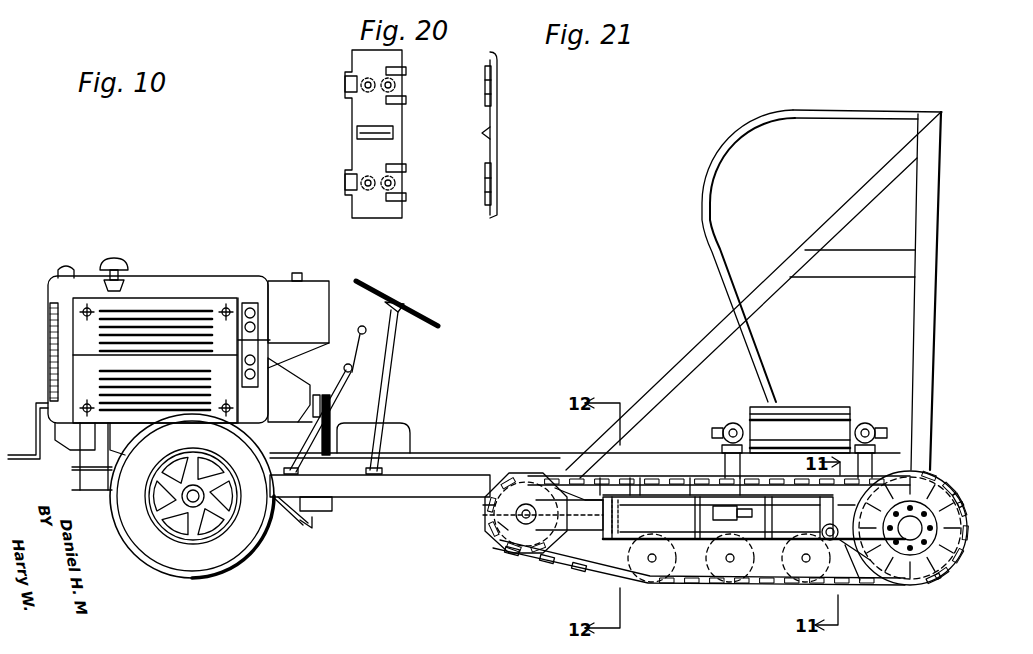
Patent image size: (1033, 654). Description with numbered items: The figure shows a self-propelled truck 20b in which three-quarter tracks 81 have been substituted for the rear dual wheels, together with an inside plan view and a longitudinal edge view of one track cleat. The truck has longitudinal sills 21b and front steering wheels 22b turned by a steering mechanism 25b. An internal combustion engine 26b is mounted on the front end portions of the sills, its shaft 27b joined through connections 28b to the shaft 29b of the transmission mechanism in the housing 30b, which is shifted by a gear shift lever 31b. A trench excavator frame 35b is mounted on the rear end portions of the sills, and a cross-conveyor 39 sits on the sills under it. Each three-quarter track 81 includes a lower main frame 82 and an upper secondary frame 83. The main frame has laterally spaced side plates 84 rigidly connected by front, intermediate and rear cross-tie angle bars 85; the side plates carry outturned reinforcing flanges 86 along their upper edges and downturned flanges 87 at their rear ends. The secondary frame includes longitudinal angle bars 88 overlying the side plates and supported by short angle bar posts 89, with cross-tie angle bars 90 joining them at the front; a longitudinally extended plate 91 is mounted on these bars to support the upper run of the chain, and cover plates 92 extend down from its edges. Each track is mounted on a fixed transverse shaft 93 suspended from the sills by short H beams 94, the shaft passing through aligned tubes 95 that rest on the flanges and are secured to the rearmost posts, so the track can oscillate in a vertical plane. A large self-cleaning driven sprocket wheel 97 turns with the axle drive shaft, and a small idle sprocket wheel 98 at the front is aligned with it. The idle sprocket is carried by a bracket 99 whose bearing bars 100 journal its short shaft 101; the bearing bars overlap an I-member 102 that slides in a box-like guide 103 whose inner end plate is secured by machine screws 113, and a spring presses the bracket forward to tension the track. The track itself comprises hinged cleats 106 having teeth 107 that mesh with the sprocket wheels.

In FIG. 10, the self-propelled truck 20b is at (392, 502).
In FIG. 10, the longitudinal sills 21b is at (413, 497).
In FIG. 10, the front steering wheels 22b is at (196, 496).
In FIG. 10, the steering mechanism 25b is at (364, 378).
In FIG. 10, the internal combustion engine 26b is at (46, 328).
In FIG. 10, the engine shaft 27b is at (316, 400).
In FIG. 10, the connections 28b is at (215, 478).
In FIG. 10, the transmission shaft 29b is at (318, 422).
In FIG. 10, the transmission housing 30b is at (402, 440).
In FIG. 10, the gear shift lever 31b is at (360, 327).
In FIG. 10, the trench excavator frame 35b is at (932, 318).
In FIG. 10, the cross-conveyor 39 is at (838, 412).
In FIG. 10, the three-quarter track 81 is at (731, 524).
In FIG. 10, the lower main frame 82 is at (590, 572).
In FIG. 10, the upper secondary frame 83 is at (754, 513).
In FIG. 10, the side plates 84 is at (556, 562).
In FIG. 10, the cross-tie angle bars 85 is at (650, 580).
In FIG. 10, the outturned reinforcing flanges 86 is at (512, 556).
In FIG. 10, the downturned flanges 87 is at (830, 540).
In FIG. 10, the longitudinal angle bars 88 is at (798, 461).
In FIG. 10, the short angle bar posts 89 is at (795, 512).
In FIG. 10, the cross-tie angle bars 90 is at (683, 475).
In FIG. 10, the longitudinally extended plate 91 is at (607, 475).
In FIG. 10, the cover plates 92 is at (648, 488).
In FIG. 10, the fixed transverse shaft 93 is at (838, 536).
In FIG. 10, the short H beams 94 is at (840, 508).
In FIG. 10, the aligned tubes 95 is at (865, 560).
In FIG. 10, the driven sprocket wheel 97 is at (918, 528).
In FIG. 10, the idle sprocket wheel 98 is at (498, 526).
In FIG. 10, the bracket 99 is at (579, 490).
In FIG. 10, the bearing bars 100 is at (546, 512).
In FIG. 10, the short shaft 101 is at (486, 518).
In FIG. 10, the I-member 102 is at (543, 519).
In FIG. 10, the box-like guide 103 is at (652, 520).
In FIG. 10, the hinged cleats 106 is at (955, 560).
In FIG. 20, the hinged cleats 106 is at (392, 208).
In FIG. 21, the hinged cleats 106 is at (498, 216).
In FIG. 10, the teeth 107 is at (925, 582).
In FIG. 20, the teeth 107 is at (393, 133).
In FIG. 21, the teeth 107 is at (495, 133).
In FIG. 10, the machine screws 113 is at (722, 518).